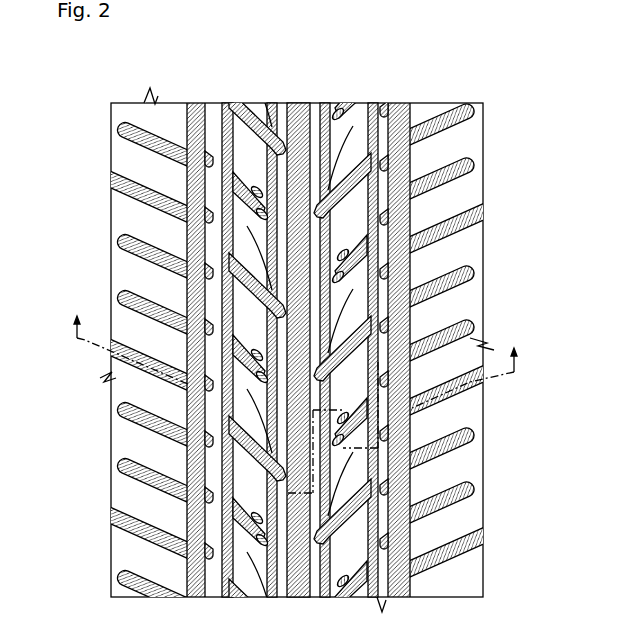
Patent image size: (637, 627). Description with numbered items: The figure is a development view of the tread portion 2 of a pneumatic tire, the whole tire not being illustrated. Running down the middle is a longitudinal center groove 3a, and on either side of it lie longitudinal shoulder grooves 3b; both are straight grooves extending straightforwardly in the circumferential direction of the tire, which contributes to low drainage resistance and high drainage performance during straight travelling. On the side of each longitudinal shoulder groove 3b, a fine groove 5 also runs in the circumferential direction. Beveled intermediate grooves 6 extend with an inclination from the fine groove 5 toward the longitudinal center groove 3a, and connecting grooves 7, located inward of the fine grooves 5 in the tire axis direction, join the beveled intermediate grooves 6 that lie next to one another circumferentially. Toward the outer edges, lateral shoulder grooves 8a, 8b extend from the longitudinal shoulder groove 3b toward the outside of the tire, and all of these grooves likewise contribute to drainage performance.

The tread portion 2 is at (101, 87).
The longitudinal center groove 3a is at (297, 103).
The longitudinal shoulder groove 3b is at (192, 525).
The fine groove 5 is at (222, 452).
The beveled intermediate groove 6 is at (345, 170).
The connecting groove 7 is at (335, 133).
The lateral shoulder groove 8a is at (160, 145).
The lateral shoulder groove 8b is at (152, 200).